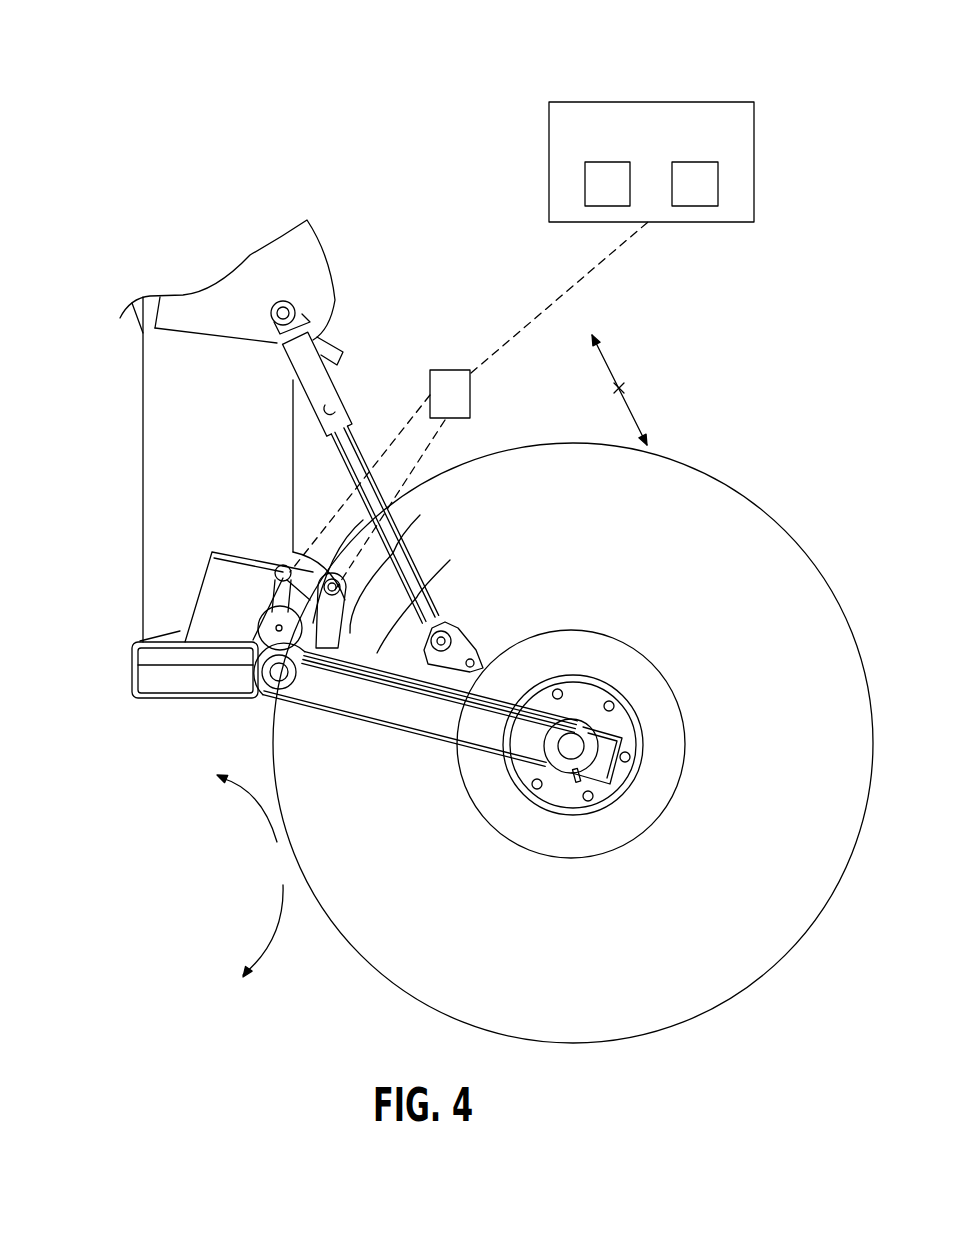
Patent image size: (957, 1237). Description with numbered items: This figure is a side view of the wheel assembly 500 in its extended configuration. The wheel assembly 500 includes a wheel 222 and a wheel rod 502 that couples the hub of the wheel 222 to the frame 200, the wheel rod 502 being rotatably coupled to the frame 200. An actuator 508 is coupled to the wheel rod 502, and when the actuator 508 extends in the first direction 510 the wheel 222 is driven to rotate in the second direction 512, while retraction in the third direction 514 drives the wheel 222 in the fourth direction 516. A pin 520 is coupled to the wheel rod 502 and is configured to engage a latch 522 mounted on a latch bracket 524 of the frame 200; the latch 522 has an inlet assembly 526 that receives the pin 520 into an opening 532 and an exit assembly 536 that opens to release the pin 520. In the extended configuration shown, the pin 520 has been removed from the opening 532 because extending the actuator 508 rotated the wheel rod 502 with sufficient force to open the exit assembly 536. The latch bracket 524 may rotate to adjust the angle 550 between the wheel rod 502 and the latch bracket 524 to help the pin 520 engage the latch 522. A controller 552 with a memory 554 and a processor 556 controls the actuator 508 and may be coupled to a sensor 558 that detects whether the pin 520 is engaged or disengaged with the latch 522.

The wheel assembly 500 is at (165, 72).
The frame 200 is at (110, 262).
The latch 522 is at (268, 470).
The controller 552 is at (655, 102).
The memory 554 is at (585, 187).
The processor 556 is at (718, 187).
The sensor 558 is at (471, 395).
The first direction 510 is at (612, 368).
The third direction 514 is at (632, 418).
The wheel 222 is at (767, 520).
The actuator 508 is at (360, 402).
The wheel rod 502 is at (368, 710).
The opening 532 is at (283, 568).
The inlet assembly 526 is at (285, 565).
The exit assembly 536 is at (262, 618).
The latch bracket 524 is at (208, 590).
The pin 520 is at (330, 580).
The angle 550 is at (416, 704).
The fourth direction 516 is at (257, 813).
The second direction 512 is at (275, 927).